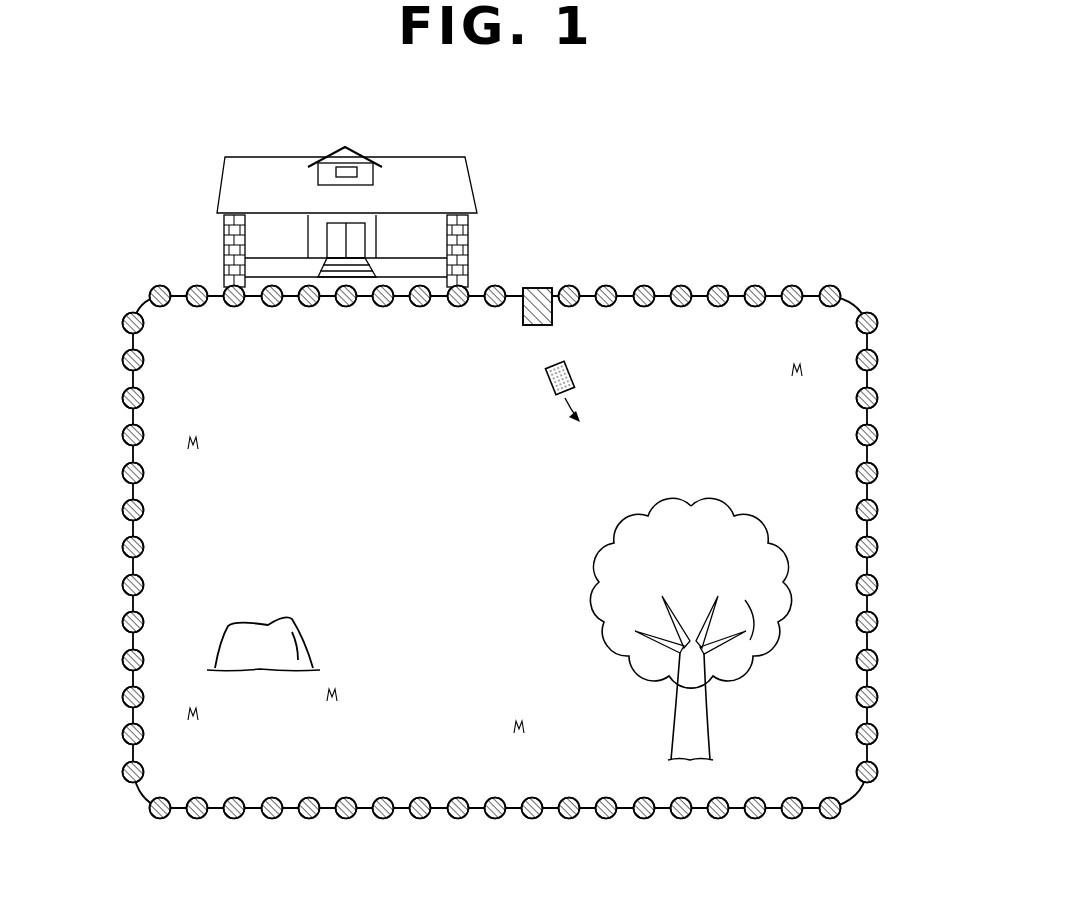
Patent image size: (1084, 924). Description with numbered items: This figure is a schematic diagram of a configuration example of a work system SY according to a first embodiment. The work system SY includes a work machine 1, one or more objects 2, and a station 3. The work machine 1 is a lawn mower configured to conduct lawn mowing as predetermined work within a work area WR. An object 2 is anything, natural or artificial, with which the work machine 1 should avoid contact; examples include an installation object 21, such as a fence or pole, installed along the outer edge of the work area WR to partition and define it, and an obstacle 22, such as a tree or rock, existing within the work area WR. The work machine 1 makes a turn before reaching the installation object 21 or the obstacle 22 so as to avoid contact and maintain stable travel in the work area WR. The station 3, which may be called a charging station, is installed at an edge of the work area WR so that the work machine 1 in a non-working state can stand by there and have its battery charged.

The work machine 1 is at (546, 379).
The object 2 is at (720, 141).
The station 3 is at (540, 288).
The installation object 21 is at (122, 322).
The obstacle 22 is at (312, 630).
The work system SY is at (98, 250).
The work area WR is at (858, 302).